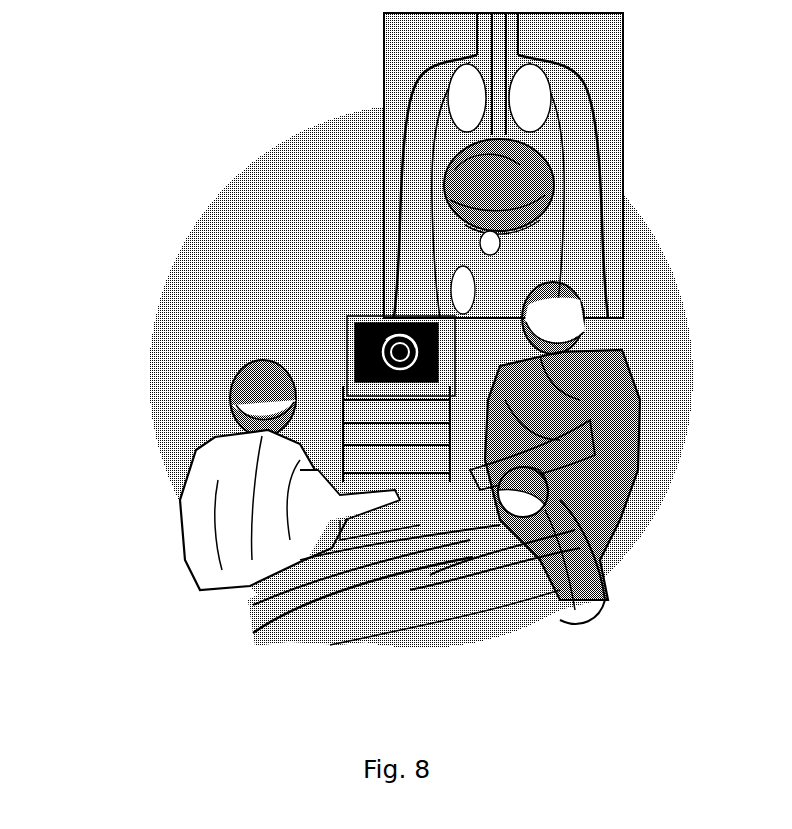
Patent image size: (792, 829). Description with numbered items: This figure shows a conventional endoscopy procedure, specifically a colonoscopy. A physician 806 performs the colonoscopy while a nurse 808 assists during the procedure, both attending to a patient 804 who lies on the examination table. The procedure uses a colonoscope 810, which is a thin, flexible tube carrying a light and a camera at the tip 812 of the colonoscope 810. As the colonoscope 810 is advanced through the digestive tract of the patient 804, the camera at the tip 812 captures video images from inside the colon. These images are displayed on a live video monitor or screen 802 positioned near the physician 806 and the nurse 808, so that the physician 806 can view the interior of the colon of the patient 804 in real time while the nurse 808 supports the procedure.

The video monitor or screen 802 is at (350, 348).
The patient 804 is at (622, 573).
The physician 806 is at (200, 580).
The nurse 808 is at (633, 385).
The colonoscope 810 is at (335, 618).
The tip of the colonoscope 812 is at (394, 136).